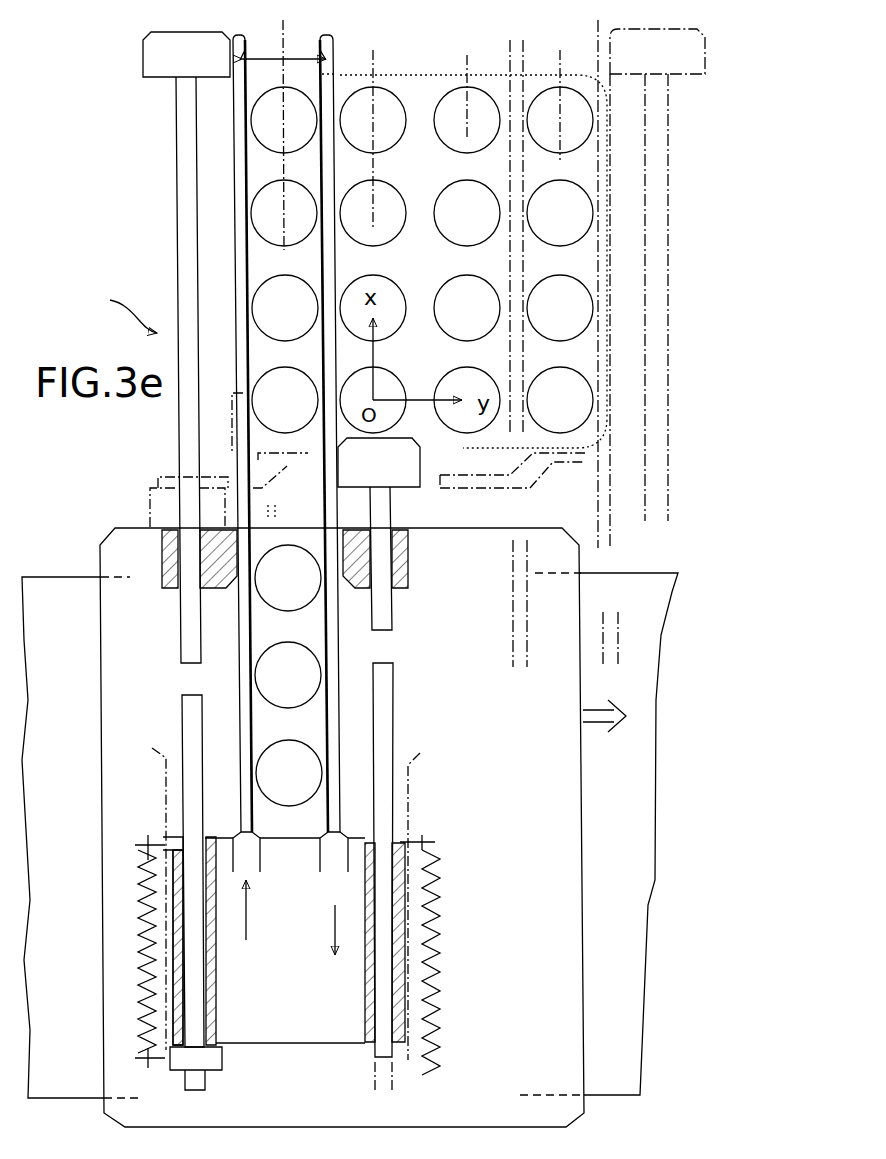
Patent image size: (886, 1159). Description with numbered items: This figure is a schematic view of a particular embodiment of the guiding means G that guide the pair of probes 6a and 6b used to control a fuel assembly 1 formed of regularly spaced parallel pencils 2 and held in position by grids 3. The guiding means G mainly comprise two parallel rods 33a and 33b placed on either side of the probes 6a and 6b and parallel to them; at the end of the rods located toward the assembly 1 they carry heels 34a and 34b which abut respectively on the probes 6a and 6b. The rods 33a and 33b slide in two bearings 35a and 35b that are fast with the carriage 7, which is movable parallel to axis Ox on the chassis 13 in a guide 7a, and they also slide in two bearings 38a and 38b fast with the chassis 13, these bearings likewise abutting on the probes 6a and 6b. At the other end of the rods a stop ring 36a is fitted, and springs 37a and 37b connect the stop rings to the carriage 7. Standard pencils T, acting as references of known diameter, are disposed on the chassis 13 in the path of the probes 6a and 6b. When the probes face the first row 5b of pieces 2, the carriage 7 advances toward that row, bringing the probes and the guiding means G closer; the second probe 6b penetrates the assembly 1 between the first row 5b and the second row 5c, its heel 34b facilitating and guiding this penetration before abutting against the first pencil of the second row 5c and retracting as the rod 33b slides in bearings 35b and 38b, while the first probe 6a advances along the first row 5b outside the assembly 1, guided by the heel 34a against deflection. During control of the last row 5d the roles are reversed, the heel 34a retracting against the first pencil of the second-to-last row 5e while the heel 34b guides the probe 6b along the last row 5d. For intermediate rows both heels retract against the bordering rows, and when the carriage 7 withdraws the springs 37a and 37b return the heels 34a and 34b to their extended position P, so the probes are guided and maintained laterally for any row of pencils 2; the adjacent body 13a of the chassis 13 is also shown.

The fuel assembly 1 is at (430, 58).
The pencils 2 is at (473, 140).
The grids 3 is at (530, 73).
The first row 5b is at (282, 42).
The second row 5c is at (372, 62).
The last row 5d is at (562, 62).
The second-to-last row 5e is at (470, 62).
The first probe 6a is at (240, 152).
The second probe 6b is at (327, 183).
The carriage 7 is at (268, 1026).
The guide 7a is at (408, 790).
The chassis 13 is at (533, 1066).
The housing body 13a is at (628, 838).
The first rod 33a is at (187, 250).
The second rod 33b is at (385, 634).
The first heel 34a is at (165, 45).
The second heel 34b is at (690, 62).
The first bearing 35a is at (190, 840).
The second bearing 35b is at (388, 833).
The stop ring 36a is at (205, 1055).
The first spring 37a is at (146, 929).
The second spring 37b is at (430, 974).
The chassis bearing 38a is at (160, 548).
The chassis bearing 38b is at (400, 552).
The guiding means G is at (122, 310).
The position P is at (290, 468).
The standard pencils T is at (296, 590).